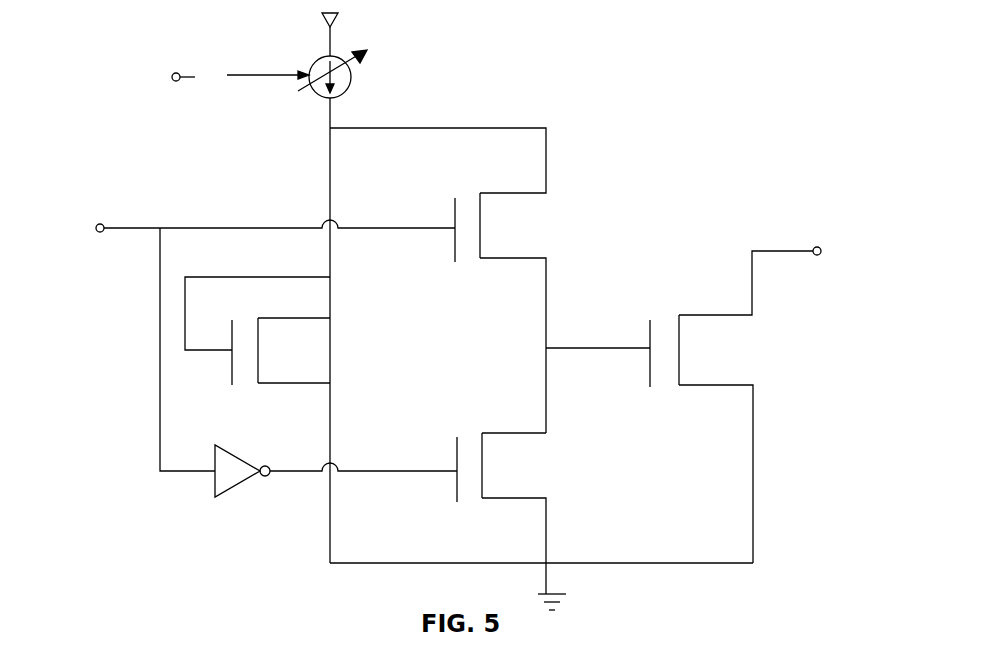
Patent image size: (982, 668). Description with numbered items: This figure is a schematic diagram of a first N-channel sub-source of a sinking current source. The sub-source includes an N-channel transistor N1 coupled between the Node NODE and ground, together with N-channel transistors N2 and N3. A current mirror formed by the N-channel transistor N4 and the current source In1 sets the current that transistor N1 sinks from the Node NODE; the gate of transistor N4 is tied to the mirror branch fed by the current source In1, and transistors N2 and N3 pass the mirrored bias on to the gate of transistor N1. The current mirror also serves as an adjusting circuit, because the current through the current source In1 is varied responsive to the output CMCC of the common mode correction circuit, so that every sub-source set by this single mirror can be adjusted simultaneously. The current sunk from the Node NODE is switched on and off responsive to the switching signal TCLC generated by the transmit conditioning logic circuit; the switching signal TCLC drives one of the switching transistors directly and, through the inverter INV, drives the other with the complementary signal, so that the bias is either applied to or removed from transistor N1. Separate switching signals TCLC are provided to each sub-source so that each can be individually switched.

The current source In1 is at (345, 74).
The common mode correction circuit output CMCC is at (203, 77).
The switching signal TCLC is at (243, 343).
The inverter INV is at (233, 487).
The N-channel transistor N4 is at (278, 331).
The N-channel transistor N2 is at (522, 313).
The N-channel transistor N3 is at (524, 521).
The N-channel transistor N1 is at (679, 407).
The Node NODE is at (850, 251).